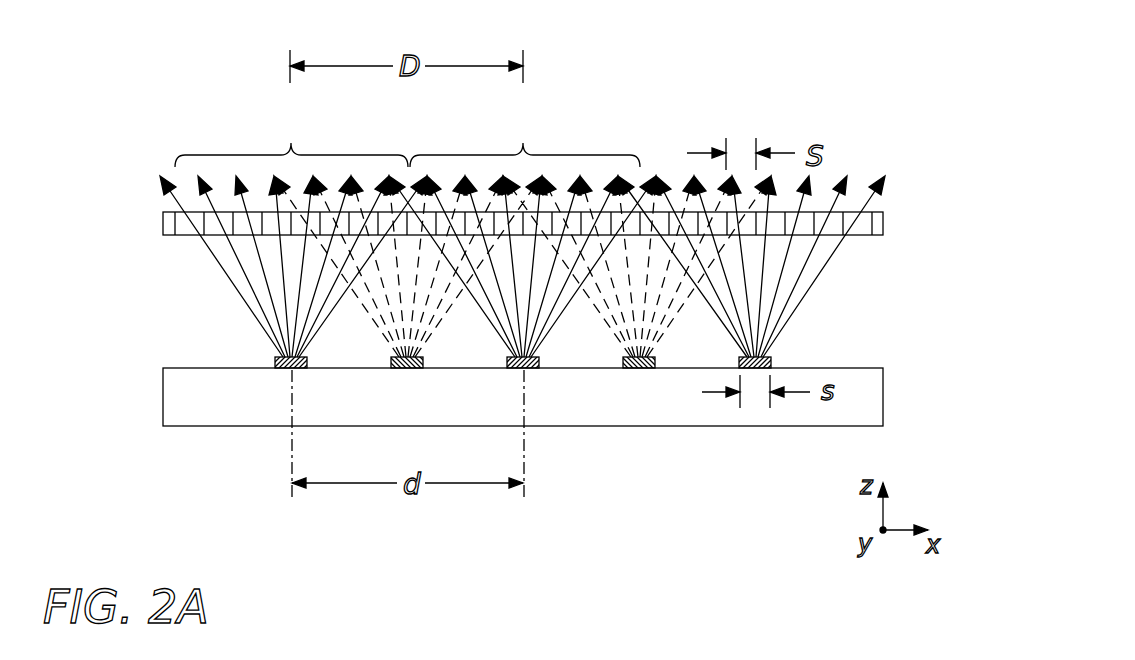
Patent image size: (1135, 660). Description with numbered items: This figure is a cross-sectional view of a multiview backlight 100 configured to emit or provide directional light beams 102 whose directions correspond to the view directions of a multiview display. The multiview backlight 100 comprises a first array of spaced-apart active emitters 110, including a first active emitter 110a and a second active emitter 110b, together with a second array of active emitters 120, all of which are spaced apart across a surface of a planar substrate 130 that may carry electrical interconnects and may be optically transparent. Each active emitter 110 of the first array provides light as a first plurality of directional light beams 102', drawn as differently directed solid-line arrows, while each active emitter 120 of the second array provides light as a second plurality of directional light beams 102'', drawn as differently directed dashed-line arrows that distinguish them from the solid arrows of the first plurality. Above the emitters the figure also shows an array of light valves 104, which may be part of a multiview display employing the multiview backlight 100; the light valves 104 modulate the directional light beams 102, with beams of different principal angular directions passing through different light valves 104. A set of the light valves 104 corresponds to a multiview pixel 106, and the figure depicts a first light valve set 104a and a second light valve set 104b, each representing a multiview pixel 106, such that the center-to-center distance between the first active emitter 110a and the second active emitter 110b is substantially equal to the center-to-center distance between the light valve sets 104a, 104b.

The multiview backlight 100 is at (840, 50).
The directional light beams 102 is at (549, 188).
The directional light beams of the first directional light beam plurality 102' is at (467, 247).
The directional light beams of the second directional light beam plurality 102'' is at (523, 348).
The light valves 104 is at (155, 218).
The first light valve set 104a is at (291, 137).
The second light valve set 104b is at (525, 137).
The multiview pixel 106 is at (233, 118).
The active emitter 110 is at (488, 410).
The first active emitter 110a is at (268, 350).
The second active emitter 110b is at (532, 380).
The active emitter 120 is at (410, 380).
The planar substrate 130 is at (168, 397).